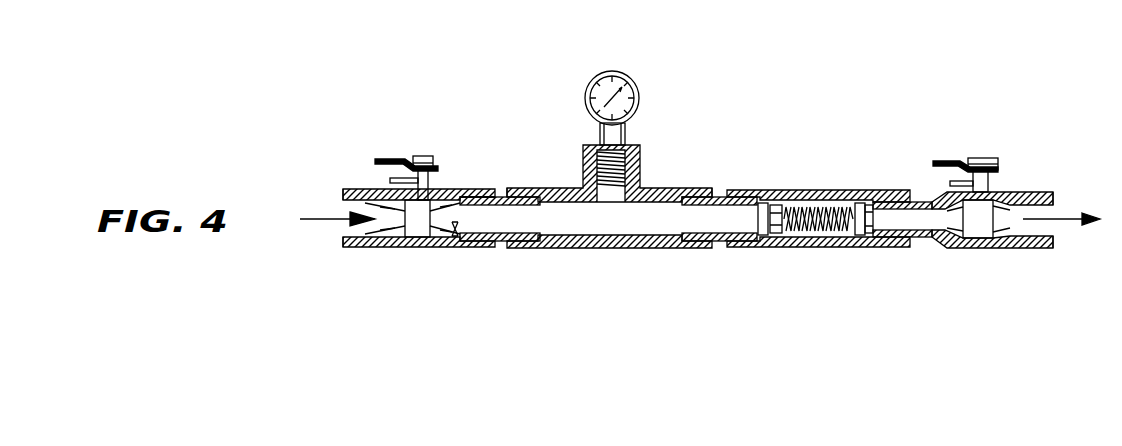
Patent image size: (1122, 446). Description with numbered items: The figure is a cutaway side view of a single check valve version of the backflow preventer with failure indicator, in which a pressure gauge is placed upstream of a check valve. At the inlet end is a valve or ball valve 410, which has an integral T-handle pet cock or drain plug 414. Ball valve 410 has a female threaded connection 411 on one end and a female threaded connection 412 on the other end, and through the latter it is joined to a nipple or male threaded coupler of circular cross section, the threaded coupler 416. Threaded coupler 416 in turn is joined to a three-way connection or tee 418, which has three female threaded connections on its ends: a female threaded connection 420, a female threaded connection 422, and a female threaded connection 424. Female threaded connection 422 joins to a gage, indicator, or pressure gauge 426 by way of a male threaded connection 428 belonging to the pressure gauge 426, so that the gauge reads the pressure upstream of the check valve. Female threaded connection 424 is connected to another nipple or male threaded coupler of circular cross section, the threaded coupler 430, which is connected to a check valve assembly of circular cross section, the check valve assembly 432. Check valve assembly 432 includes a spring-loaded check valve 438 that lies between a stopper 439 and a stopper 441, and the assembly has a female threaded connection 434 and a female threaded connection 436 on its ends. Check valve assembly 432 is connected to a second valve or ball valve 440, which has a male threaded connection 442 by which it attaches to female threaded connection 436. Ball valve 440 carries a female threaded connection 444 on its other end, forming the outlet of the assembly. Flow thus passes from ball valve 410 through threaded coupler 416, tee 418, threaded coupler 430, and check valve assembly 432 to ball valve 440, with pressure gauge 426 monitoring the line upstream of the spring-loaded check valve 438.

The ball valve 410 is at (408, 256).
The female threaded connection 411 is at (360, 189).
The female threaded connection 412 is at (475, 189).
The T-handle pet cock or drain plug 414 is at (451, 247).
The threaded coupler 416 is at (497, 247).
The tee 418 is at (605, 262).
The female threaded connection 420 is at (517, 189).
The female threaded connection 422 is at (583, 163).
The female threaded connection 424 is at (697, 190).
The pressure gauge 426 is at (608, 56).
The male threaded connection 428 is at (640, 145).
The threaded coupler 430 is at (718, 247).
The check valve assembly 432 is at (811, 178).
The female threaded connection 434 is at (740, 190).
The female threaded connection 436 is at (897, 190).
The spring-loaded check valve 438 is at (821, 245).
The stopper 439 is at (772, 190).
The ball valve 440 is at (981, 264).
The stopper 441 is at (867, 190).
The male threaded connection 442 is at (880, 247).
The female threaded connection 444 is at (1033, 190).